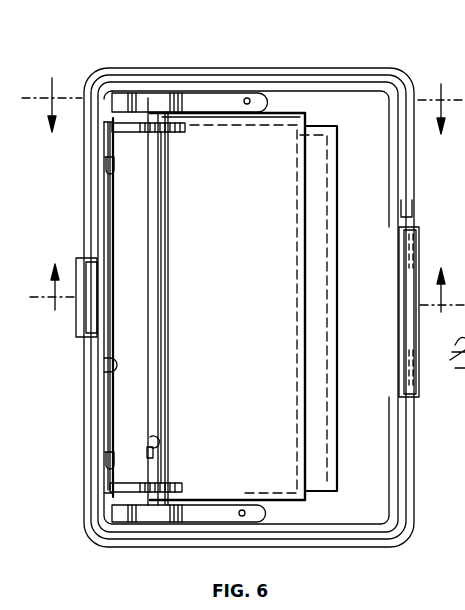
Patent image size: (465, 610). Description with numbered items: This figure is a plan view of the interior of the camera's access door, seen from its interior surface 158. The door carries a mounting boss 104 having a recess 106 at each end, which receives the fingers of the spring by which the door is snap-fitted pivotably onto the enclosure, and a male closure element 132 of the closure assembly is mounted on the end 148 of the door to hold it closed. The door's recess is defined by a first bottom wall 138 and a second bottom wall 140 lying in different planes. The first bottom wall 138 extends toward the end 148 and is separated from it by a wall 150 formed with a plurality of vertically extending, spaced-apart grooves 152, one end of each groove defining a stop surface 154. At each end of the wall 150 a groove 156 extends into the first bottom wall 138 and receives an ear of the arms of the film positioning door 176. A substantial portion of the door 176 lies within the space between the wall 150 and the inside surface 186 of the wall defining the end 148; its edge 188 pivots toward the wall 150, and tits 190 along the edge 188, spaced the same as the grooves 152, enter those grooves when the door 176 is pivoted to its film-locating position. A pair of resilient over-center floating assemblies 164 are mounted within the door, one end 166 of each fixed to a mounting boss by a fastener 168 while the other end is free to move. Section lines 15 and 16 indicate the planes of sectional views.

The section line 15- 15 is at (243, 89).
The section line 16- 16 is at (247, 299).
The boss 104 is at (416, 385).
The recess 106 is at (412, 258).
The male closure element 132 is at (80, 332).
The first bottom wall 138 is at (256, 301).
The second bottom wall 140 is at (318, 284).
The end of access door 148 is at (82, 436).
The wall 150 is at (162, 248).
The grooves 152 is at (155, 453).
The stop surface 154 is at (152, 440).
The groove 156 is at (185, 128).
The interior surface 158 is at (372, 121).
The resilient over-center floating assembly 164 is at (150, 100).
The end of floating assembly 166 is at (268, 510).
The fastener 168 is at (247, 98).
The film positioning door 176 is at (145, 301).
The inside surface 186 is at (105, 370).
The edge 188 is at (114, 248).
The tits 190 is at (108, 178).